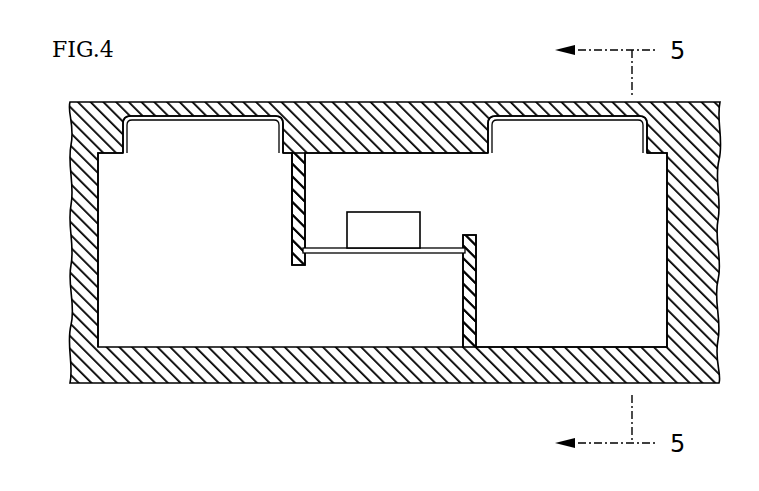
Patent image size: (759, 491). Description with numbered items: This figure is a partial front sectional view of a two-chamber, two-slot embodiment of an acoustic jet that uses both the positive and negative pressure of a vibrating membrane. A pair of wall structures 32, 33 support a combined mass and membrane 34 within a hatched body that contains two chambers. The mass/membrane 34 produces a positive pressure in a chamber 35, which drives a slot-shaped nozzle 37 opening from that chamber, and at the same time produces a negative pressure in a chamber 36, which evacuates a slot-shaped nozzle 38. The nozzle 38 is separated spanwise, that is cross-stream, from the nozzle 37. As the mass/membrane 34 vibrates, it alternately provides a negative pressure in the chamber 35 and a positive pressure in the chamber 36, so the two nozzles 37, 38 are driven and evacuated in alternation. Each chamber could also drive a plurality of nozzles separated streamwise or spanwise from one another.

The wall structure 32 is at (290, 178).
The wall structure 33 is at (478, 305).
The combined mass and membrane 34 is at (423, 245).
The chamber 35 is at (173, 288).
The chamber 36 is at (583, 288).
The slot-shaped nozzle 37 is at (203, 132).
The slot-shaped nozzle 38 is at (538, 132).